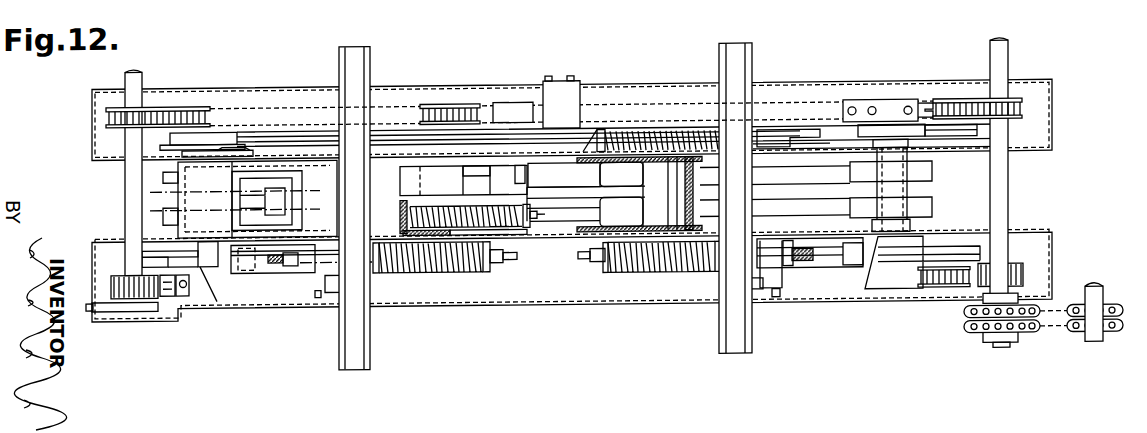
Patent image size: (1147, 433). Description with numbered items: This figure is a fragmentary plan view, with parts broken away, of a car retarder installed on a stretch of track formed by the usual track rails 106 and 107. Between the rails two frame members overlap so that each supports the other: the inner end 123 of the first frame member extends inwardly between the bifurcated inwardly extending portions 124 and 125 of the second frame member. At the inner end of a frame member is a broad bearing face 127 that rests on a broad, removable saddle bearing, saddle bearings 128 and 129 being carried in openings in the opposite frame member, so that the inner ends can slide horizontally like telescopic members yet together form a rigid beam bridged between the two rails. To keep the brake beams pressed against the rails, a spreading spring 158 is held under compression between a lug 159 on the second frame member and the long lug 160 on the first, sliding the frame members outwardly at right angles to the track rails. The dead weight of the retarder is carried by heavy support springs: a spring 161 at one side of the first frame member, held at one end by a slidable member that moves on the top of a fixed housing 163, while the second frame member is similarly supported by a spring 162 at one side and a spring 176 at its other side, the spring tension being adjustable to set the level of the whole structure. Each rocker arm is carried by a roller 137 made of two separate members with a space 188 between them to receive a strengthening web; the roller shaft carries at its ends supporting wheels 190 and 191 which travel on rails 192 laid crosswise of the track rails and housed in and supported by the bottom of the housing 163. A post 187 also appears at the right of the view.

The track rail 106 is at (352, 366).
The track rail 107 is at (743, 360).
The inner end of frame member FM1 123 is at (572, 203).
The bifurcated inwardly extending portion 124 is at (650, 237).
The bifurcated inwardly extending portion 125 is at (621, 164).
The bearing face 127 is at (648, 186).
The saddle bearing 128 is at (433, 278).
The saddle bearing 129 is at (650, 216).
The roller 137 is at (163, 187).
The spreading spring 158 is at (518, 232).
The lug 159 is at (525, 225).
The long lug 160 is at (393, 277).
The spring 161 is at (437, 278).
The spring 162 is at (681, 280).
The housing 163 is at (175, 76).
The spring 176 is at (667, 143).
The post 187 is at (1007, 187).
The space 188 is at (163, 187).
The supporting wheel 190 is at (222, 134).
The supporting wheel 191 is at (192, 269).
The rail 192 is at (950, 259).